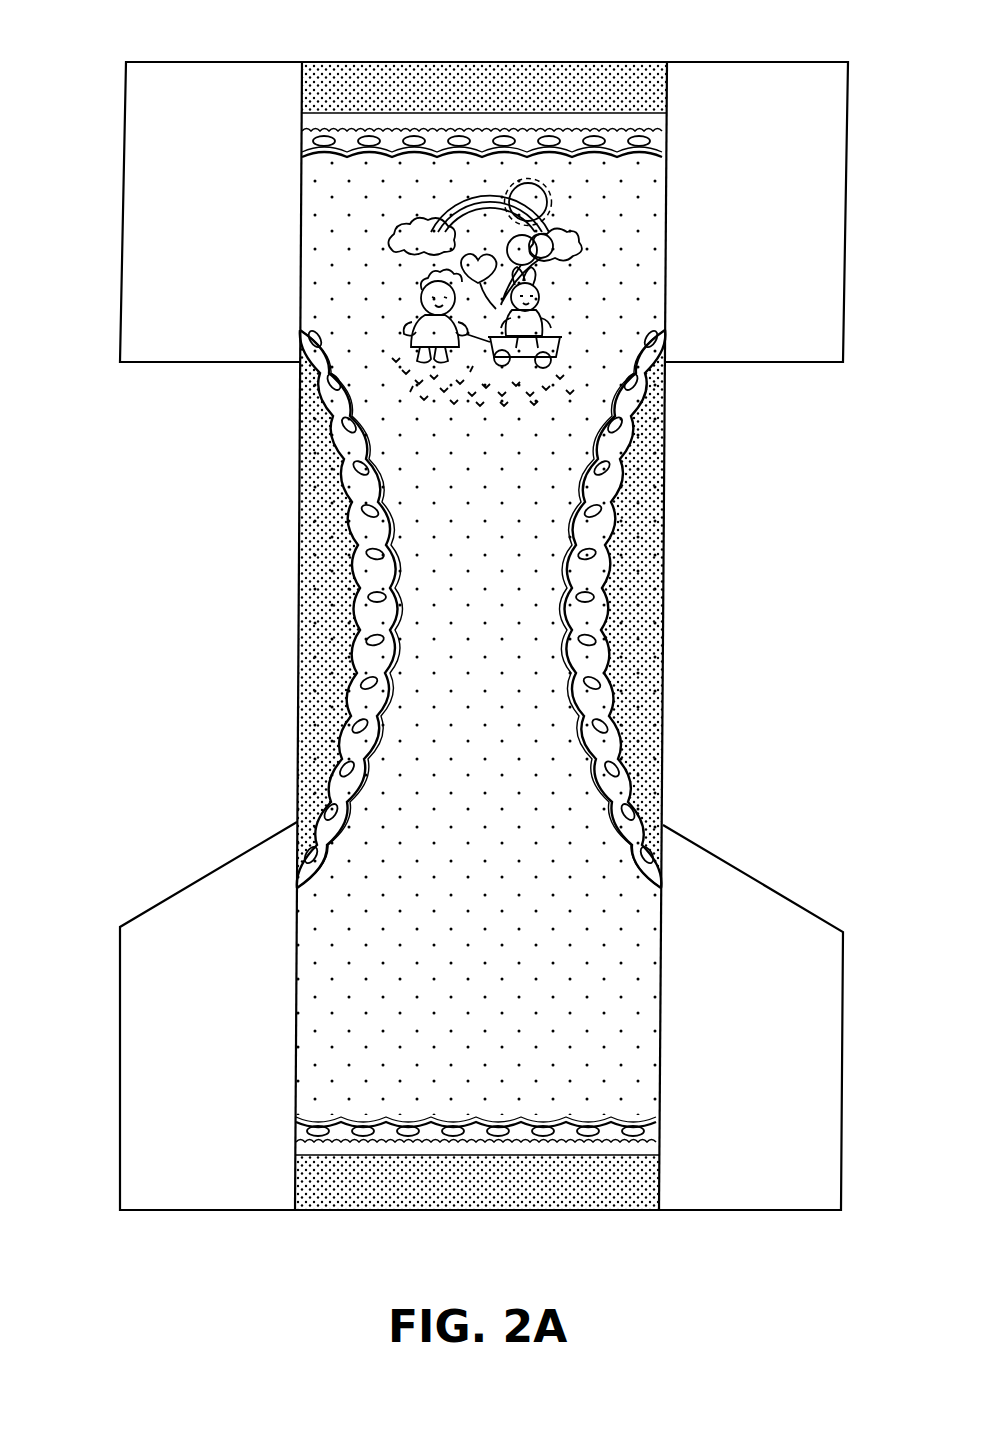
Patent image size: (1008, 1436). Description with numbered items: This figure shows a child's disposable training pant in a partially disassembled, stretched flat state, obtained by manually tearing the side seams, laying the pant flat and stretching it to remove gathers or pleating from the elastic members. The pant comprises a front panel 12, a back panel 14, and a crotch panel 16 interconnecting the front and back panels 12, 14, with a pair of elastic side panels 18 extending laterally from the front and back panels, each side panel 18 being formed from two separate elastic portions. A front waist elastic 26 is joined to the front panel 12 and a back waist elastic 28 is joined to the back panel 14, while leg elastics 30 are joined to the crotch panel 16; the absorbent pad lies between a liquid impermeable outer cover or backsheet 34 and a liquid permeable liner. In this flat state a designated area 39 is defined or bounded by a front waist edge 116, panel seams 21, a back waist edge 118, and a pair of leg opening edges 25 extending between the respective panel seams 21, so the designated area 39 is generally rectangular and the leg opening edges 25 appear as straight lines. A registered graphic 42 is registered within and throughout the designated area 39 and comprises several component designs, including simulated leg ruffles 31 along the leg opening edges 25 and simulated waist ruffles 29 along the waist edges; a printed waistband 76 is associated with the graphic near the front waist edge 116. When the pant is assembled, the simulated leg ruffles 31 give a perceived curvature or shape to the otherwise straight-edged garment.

The front panel 12 is at (335, 293).
The back panel 14 is at (333, 986).
The crotch panel 16 is at (282, 693).
The elastic side panels 18 is at (808, 226).
The panel seams 21 is at (300, 192).
The leg opening edges 25 is at (300, 452).
The front waist elastic 26 is at (510, 75).
The back waist elastic 28 is at (605, 1195).
The simulated waist ruffles 29 is at (668, 125).
The leg elastics 30 is at (648, 606).
The simulated leg ruffles 31 is at (360, 592).
The outer cover or backsheet 34 is at (585, 806).
The designated area 39 is at (552, 496).
The registered graphic 42 is at (615, 330).
The printed waistband 76 is at (382, 112).
The front waist edge 116 is at (420, 62).
The back waist edge 118 is at (380, 1214).